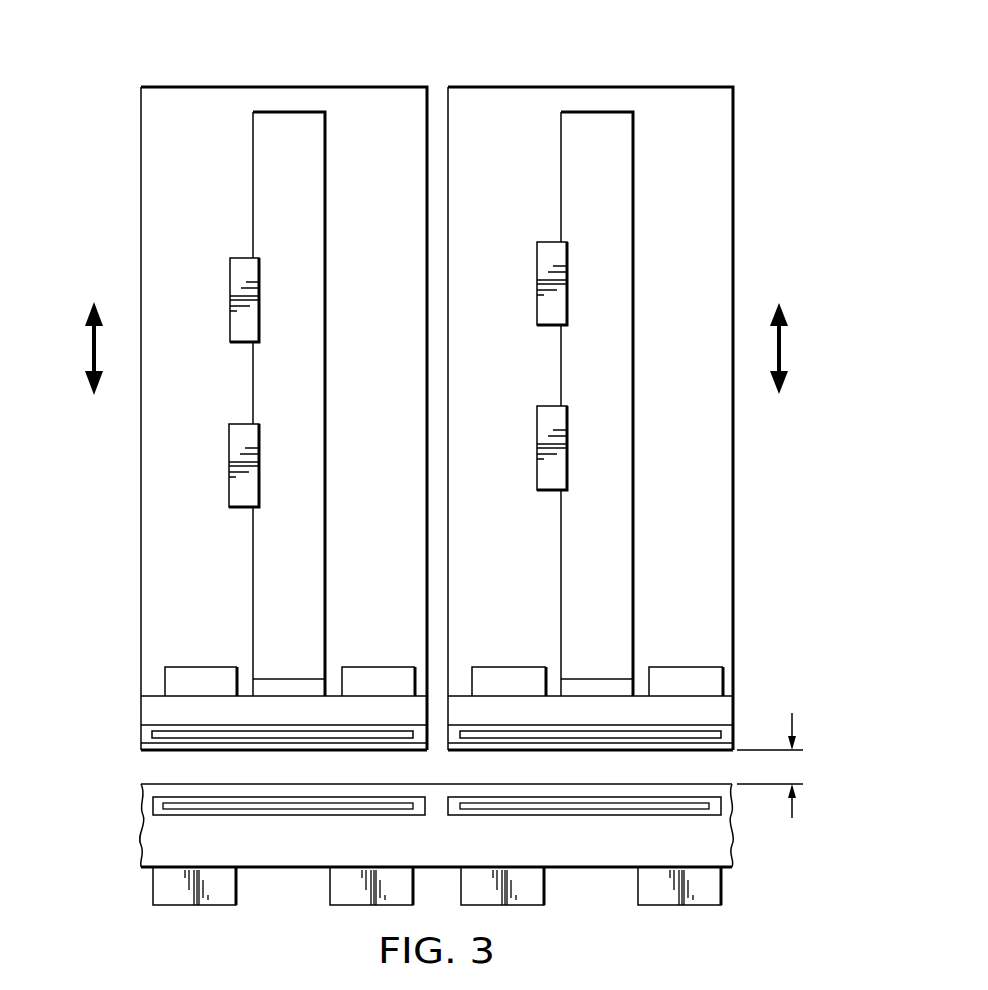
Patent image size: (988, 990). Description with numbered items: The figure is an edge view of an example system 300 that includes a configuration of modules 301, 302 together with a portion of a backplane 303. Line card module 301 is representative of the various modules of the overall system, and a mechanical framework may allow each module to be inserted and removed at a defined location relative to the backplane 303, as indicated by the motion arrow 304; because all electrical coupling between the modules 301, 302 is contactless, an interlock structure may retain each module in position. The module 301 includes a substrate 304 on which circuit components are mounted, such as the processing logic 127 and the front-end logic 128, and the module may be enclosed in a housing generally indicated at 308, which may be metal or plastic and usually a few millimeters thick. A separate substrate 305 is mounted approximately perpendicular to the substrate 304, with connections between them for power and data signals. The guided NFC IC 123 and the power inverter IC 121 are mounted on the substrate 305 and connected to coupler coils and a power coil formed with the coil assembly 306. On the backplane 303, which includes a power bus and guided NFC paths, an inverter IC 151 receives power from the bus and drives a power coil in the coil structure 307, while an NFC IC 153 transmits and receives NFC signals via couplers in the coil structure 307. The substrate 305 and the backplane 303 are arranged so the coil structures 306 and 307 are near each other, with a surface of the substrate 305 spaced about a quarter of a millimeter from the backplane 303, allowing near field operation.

The system 300 is at (76, 57).
The line card module 301 is at (283, 87).
The module 302 is at (590, 87).
The backplane substrate 303 is at (141, 828).
The substrate 304 is at (93, 345).
The separate substrate 305 is at (150, 713).
The coil assembly 306 is at (150, 735).
The coil structure 307 is at (152, 805).
The housing 308 is at (141, 218).
The power inverter IC 121 is at (200, 667).
The guided NFC IC 123 is at (378, 667).
The processing logic 127 is at (229, 440).
The front-end logic 128 is at (230, 278).
The inverter IC 151 is at (153, 887).
The NFC IC 153 is at (330, 884).